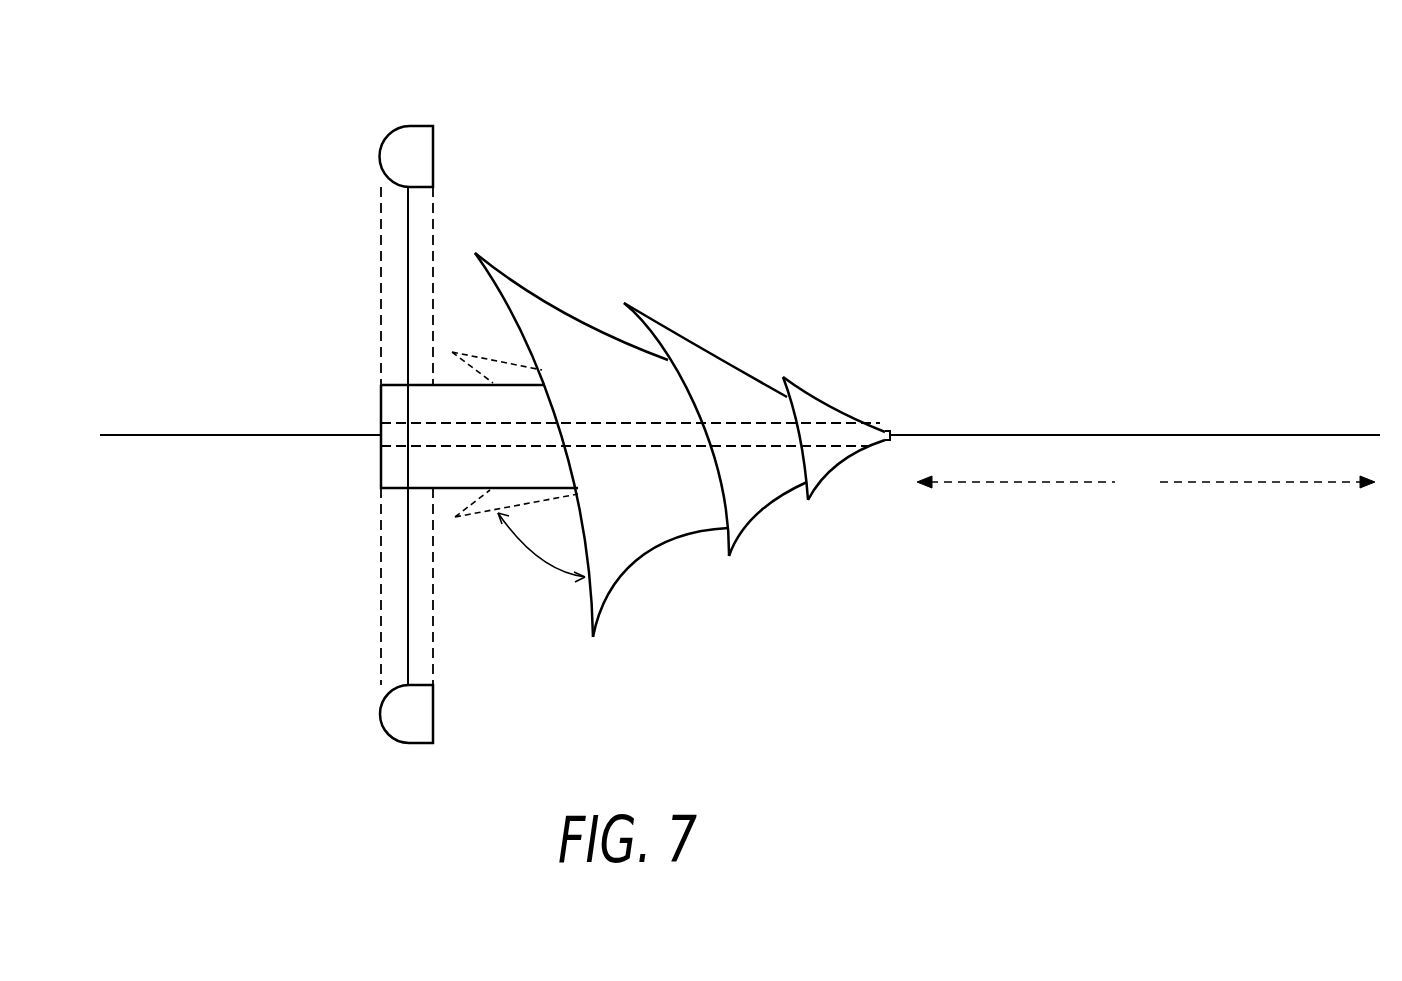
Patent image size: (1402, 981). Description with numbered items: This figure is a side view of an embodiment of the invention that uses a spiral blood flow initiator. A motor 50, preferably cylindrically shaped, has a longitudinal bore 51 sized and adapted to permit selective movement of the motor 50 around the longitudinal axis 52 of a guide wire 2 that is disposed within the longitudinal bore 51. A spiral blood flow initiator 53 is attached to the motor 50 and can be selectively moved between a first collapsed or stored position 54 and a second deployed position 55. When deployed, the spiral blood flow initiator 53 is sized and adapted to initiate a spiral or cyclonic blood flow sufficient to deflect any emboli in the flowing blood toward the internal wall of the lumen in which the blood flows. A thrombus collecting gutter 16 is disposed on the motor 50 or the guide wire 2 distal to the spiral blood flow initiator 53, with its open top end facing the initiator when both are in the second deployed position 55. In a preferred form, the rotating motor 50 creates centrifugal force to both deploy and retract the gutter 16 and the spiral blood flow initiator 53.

The guide wire 2 is at (163, 435).
The thrombus collecting gutter 16 is at (421, 126).
The motor 50 is at (387, 493).
The longitudinal bore 51 is at (390, 430).
The longitudinal axis 52 is at (1146, 483).
The spiral blood flow initiator 53 is at (690, 337).
The first collapsed or stored position 54 is at (515, 454).
The second deployed position 55 is at (541, 569).